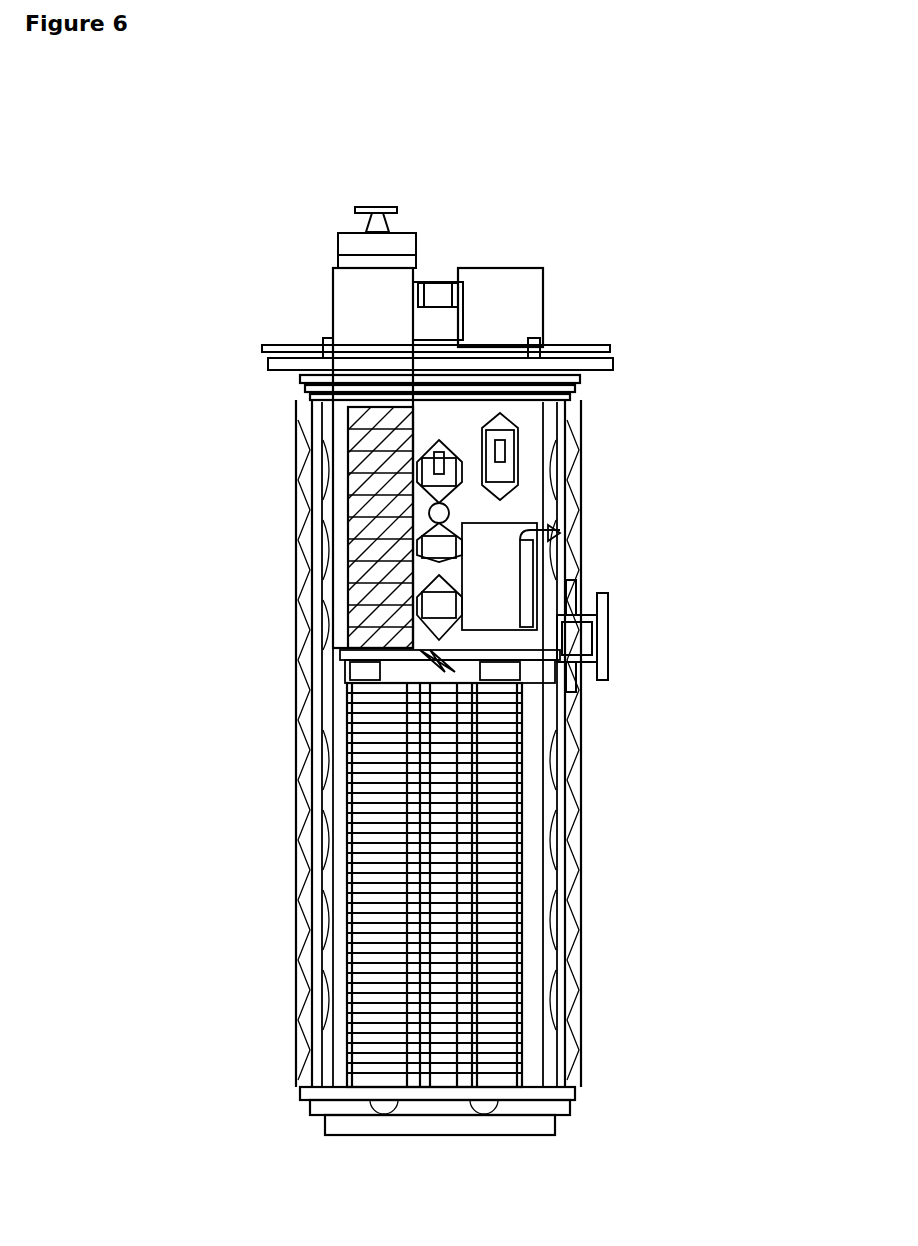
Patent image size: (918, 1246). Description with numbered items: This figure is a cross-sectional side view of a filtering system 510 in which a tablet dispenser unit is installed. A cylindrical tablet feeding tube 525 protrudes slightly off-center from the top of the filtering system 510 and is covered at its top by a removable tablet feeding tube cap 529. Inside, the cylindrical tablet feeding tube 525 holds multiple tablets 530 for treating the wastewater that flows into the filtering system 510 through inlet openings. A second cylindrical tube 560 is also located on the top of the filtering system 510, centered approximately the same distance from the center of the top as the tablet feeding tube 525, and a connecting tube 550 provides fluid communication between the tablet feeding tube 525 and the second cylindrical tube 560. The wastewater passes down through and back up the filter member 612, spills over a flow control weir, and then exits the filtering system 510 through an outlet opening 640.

The filtering system 510 is at (288, 703).
The cylindrical tablet feeding tube 525 is at (337, 427).
The tablet feeding tube cap 529 is at (352, 246).
The tablets 530 is at (347, 497).
The connector 550 is at (444, 290).
The second cylindrical tube 560 is at (543, 288).
The filter member 612 is at (373, 858).
The outlet opening 640 is at (608, 633).